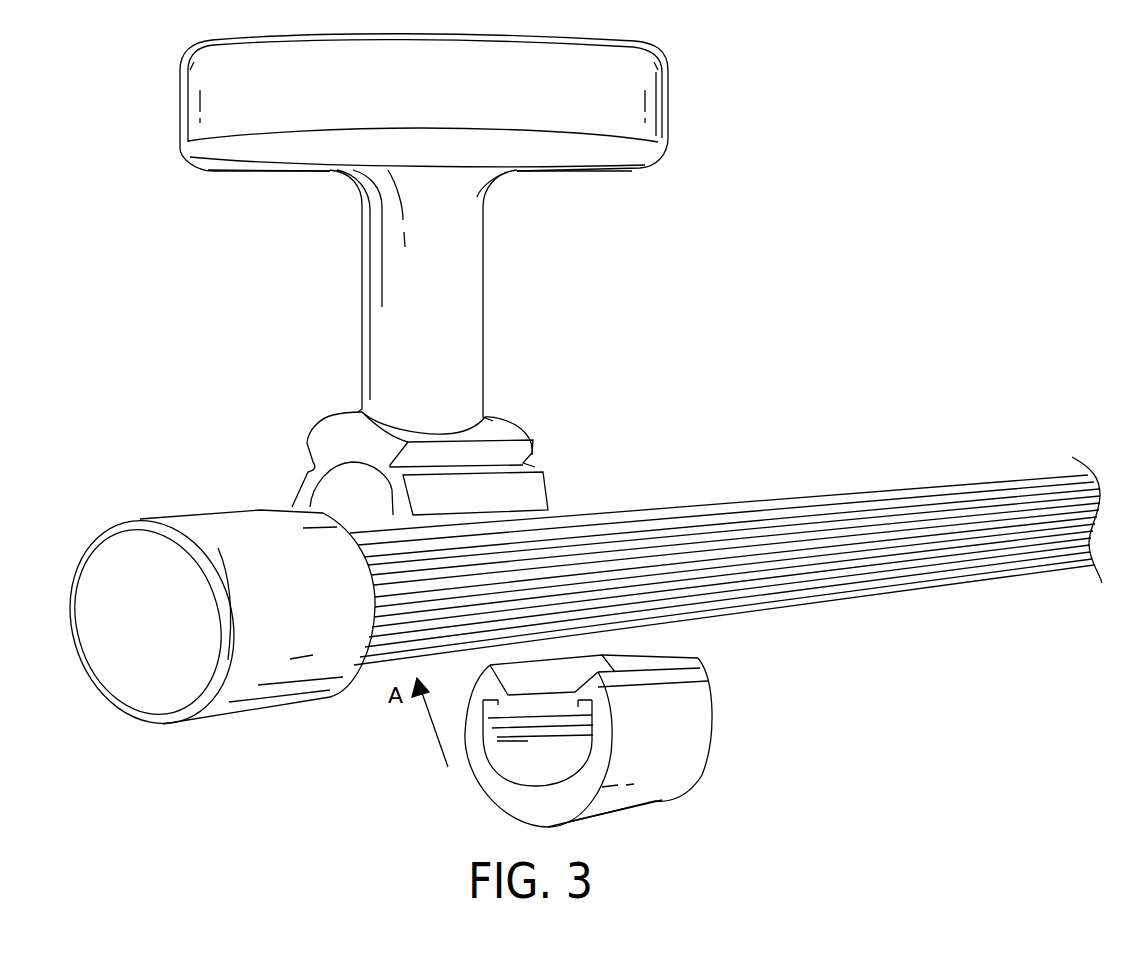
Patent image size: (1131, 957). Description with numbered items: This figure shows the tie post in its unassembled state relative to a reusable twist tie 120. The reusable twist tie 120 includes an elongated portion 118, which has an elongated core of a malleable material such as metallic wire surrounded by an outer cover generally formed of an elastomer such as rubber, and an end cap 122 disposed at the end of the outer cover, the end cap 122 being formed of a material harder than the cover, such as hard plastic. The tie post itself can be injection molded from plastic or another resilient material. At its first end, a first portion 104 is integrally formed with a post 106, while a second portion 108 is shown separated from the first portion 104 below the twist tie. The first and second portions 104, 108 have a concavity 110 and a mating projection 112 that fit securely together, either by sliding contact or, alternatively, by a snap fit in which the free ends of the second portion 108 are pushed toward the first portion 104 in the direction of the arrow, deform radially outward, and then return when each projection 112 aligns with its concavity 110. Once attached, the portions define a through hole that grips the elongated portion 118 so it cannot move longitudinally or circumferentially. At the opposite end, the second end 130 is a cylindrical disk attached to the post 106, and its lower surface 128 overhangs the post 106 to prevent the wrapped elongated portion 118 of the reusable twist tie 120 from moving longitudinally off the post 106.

The first portion 104 is at (536, 468).
The post 106 is at (483, 310).
The second portion 108 is at (733, 758).
The concavity 110 is at (307, 467).
The mating projection 112 is at (545, 488).
The elongated portion 118 is at (750, 503).
The reusable twist tie 120 is at (855, 478).
The end cap 122 is at (135, 515).
The surface 128 is at (610, 172).
The second end 130 is at (676, 108).